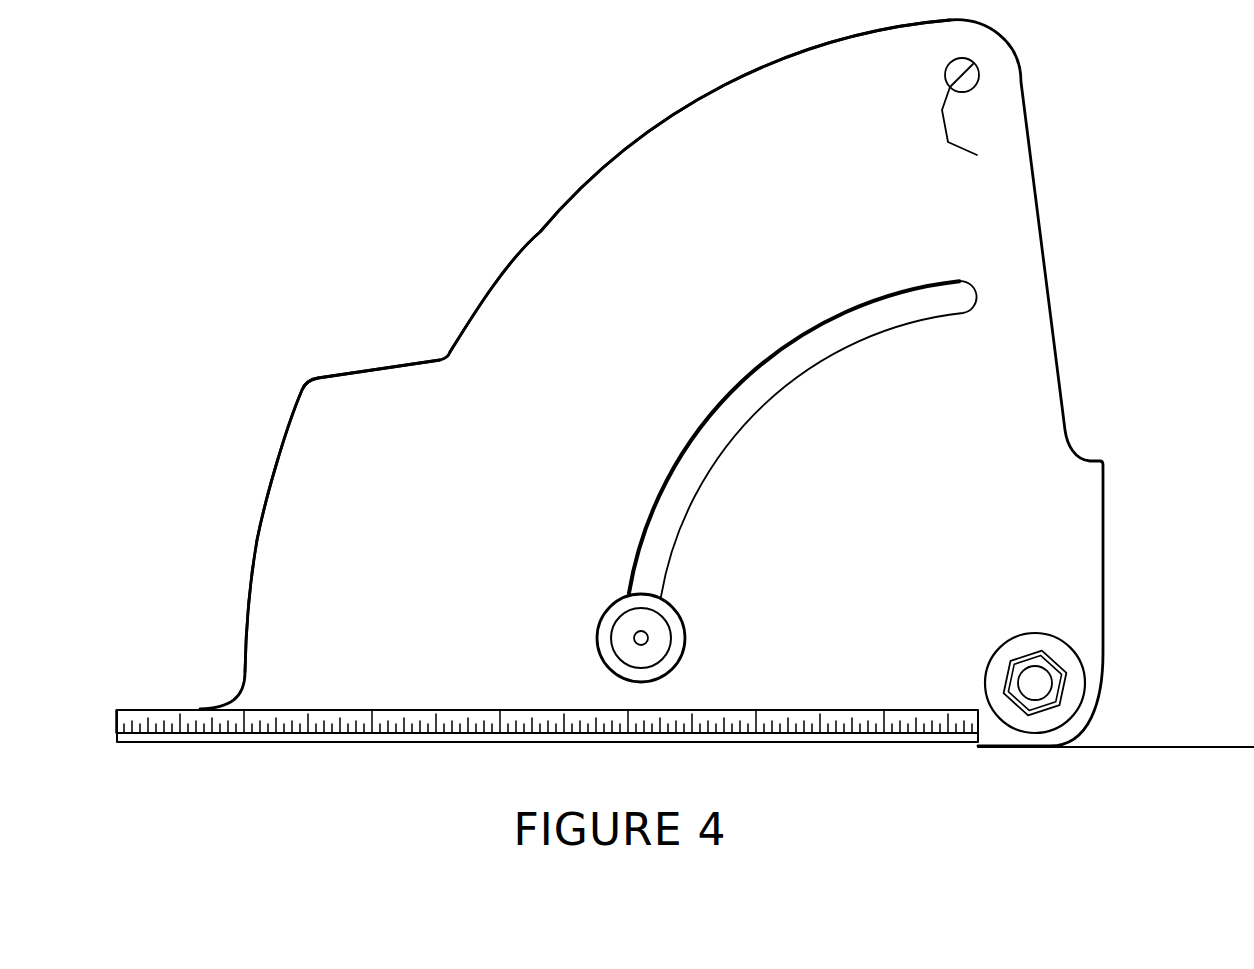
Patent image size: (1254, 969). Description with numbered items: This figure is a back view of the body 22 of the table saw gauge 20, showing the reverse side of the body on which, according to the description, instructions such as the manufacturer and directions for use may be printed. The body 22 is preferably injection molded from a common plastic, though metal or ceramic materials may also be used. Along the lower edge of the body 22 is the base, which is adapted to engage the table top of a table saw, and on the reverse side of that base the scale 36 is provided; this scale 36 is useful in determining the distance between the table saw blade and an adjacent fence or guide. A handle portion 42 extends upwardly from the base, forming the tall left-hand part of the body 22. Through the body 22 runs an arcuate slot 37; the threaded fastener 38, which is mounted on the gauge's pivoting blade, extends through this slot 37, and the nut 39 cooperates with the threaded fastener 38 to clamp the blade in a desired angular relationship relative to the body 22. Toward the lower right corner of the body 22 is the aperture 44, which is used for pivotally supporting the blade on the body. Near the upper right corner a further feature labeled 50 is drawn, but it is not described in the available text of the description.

The table saw gauge 20 is at (637, 110).
The body 22 is at (531, 240).
The scale 36 is at (427, 728).
The arcuate slot 37 is at (652, 525).
The threaded fastener 38 is at (646, 641).
The nut 39 is at (618, 628).
The handle portion 42 is at (340, 446).
The aperture 44 is at (1045, 685).
The screw with hook slot 50 is at (977, 155).